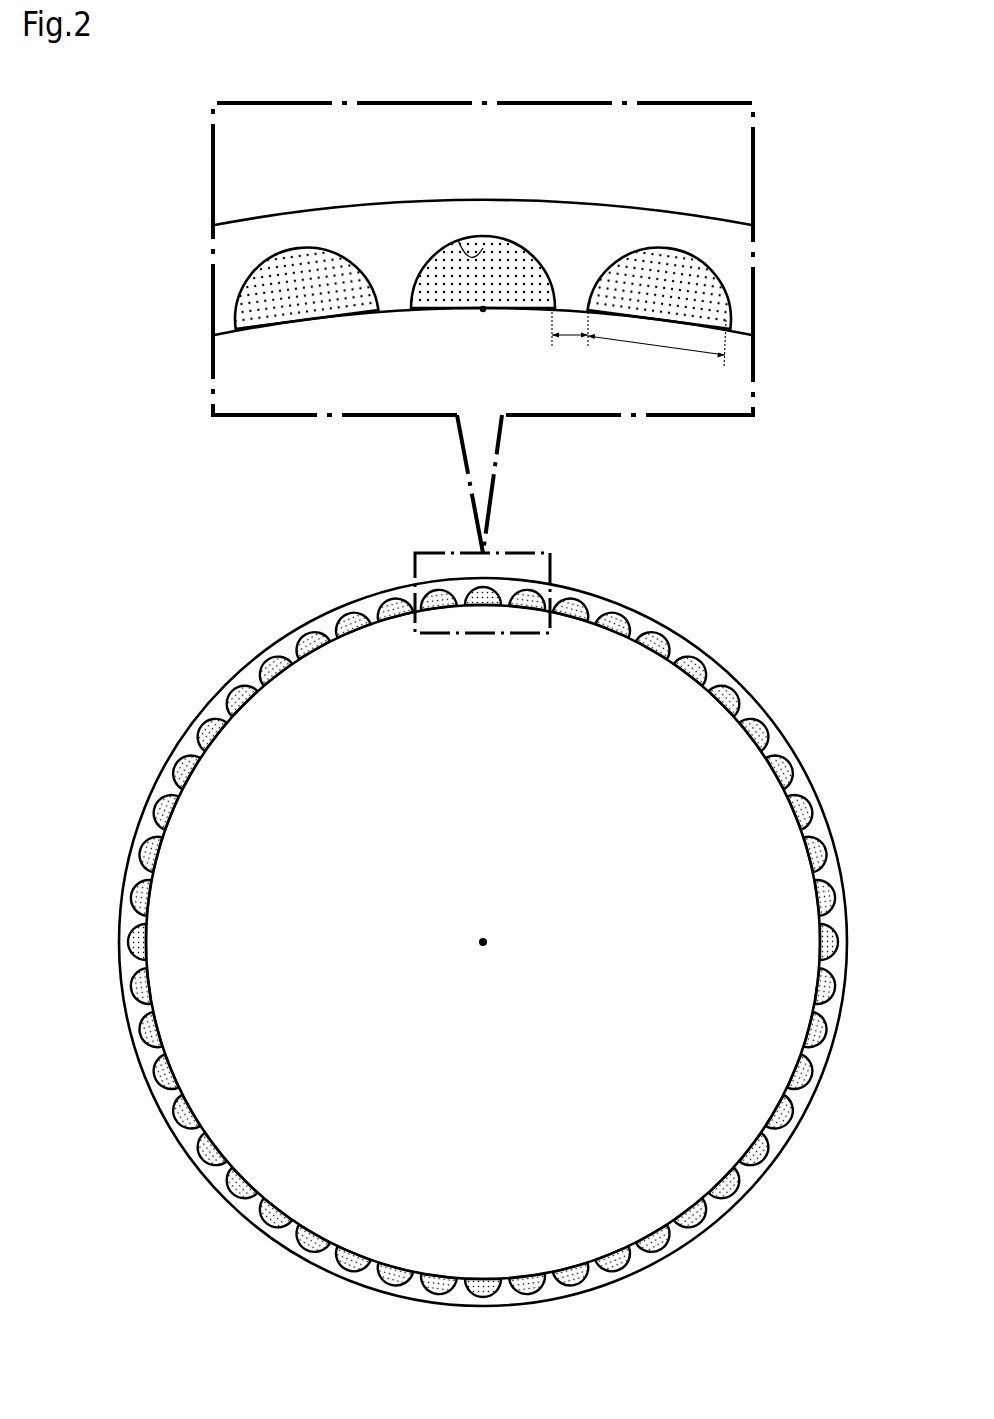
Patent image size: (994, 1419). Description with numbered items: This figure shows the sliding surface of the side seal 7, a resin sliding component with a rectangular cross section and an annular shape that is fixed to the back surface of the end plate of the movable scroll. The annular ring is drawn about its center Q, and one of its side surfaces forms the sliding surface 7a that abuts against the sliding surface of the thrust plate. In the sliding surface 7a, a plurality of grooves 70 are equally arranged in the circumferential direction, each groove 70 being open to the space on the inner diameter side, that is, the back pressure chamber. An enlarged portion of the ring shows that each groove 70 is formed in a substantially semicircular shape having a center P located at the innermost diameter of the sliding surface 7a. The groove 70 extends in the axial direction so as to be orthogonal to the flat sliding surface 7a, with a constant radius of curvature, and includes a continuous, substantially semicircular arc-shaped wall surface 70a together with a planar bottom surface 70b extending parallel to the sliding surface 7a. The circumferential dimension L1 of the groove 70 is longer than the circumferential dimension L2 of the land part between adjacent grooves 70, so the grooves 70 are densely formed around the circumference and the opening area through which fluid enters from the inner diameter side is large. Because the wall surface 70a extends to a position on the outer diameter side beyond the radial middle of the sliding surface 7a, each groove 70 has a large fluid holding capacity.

The side seal 7 is at (709, 602).
The sliding surface 7a is at (747, 708).
The groove 70 is at (478, 608).
The wall surface 70a is at (483, 248).
The bottom surface 70b is at (508, 283).
The center of groove P is at (483, 315).
The center of sliding surface Q is at (485, 937).
The circumferential dimension of groove L1 is at (657, 349).
The circumferential dimension of land part L2 is at (569, 345).